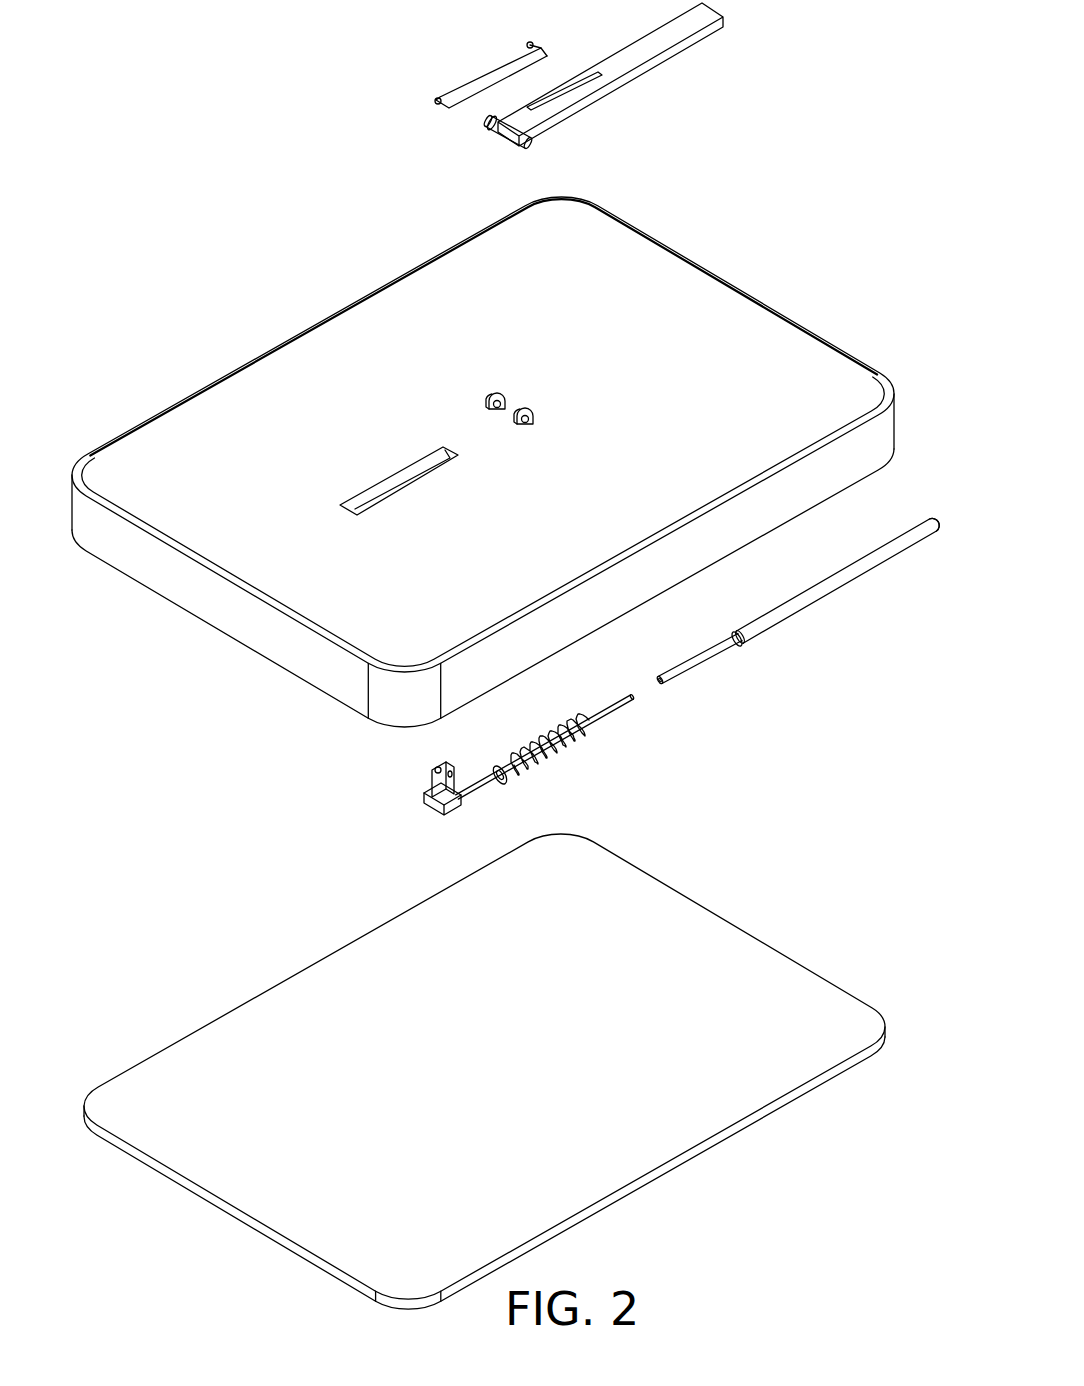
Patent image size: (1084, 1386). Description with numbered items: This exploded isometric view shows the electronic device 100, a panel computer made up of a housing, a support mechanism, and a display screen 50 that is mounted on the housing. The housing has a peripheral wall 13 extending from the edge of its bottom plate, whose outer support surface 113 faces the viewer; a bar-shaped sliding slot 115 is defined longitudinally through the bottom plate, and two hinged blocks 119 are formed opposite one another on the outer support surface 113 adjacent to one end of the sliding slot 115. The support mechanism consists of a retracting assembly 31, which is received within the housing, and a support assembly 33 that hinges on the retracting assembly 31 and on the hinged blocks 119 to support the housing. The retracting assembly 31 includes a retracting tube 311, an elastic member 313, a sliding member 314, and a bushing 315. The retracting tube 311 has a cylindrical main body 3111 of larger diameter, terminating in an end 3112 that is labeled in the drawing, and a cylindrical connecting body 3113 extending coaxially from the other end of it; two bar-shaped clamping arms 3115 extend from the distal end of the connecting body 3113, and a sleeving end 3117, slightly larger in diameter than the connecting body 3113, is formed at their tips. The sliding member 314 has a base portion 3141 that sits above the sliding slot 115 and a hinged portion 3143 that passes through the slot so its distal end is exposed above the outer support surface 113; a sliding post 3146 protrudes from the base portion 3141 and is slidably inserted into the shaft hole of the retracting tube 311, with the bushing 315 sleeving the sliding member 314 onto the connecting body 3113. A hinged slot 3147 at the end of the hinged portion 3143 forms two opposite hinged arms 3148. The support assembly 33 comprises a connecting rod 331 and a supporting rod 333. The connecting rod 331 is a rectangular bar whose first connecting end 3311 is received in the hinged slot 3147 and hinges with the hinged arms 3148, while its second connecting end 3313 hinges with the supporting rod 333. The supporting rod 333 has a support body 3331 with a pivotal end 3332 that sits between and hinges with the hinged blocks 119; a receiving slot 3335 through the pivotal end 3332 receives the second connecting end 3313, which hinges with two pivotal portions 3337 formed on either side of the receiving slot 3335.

The electronic device 100 is at (297, 82).
The peripheral wall 13 is at (483, 462).
The outer support surface 113 is at (202, 437).
The sliding slot 115 is at (422, 463).
The hinged blocks 119 is at (493, 387).
The retracting assembly 31 is at (607, 678).
The retracting tube 311 is at (759, 598).
The main body 3111 is at (818, 573).
The end of shaft 3112 is at (912, 533).
The connecting body 3113 is at (727, 637).
The clamping arms 3115 is at (678, 668).
The sleeving end 3117 is at (657, 680).
The elastic member 313 is at (558, 752).
The sliding member 314 is at (454, 773).
The base portion 3141 is at (438, 813).
The hinged portion 3143 is at (430, 788).
The sliding post 3146 is at (480, 790).
The hinged slot 3147 is at (433, 777).
The hinged arms 3148 is at (433, 768).
The bushing 315 is at (510, 777).
The support assembly 33 is at (568, 100).
The connecting rod 331 is at (458, 93).
The first connecting end 3311 is at (447, 98).
The second connecting end 3313 is at (527, 43).
The supporting rod 333 is at (595, 100).
The support body 3331 is at (647, 74).
The pivotal end 3332 is at (537, 133).
The receiving slot 3335 is at (497, 130).
The pivotal portions 3337 is at (552, 107).
The display screen 50 is at (718, 963).